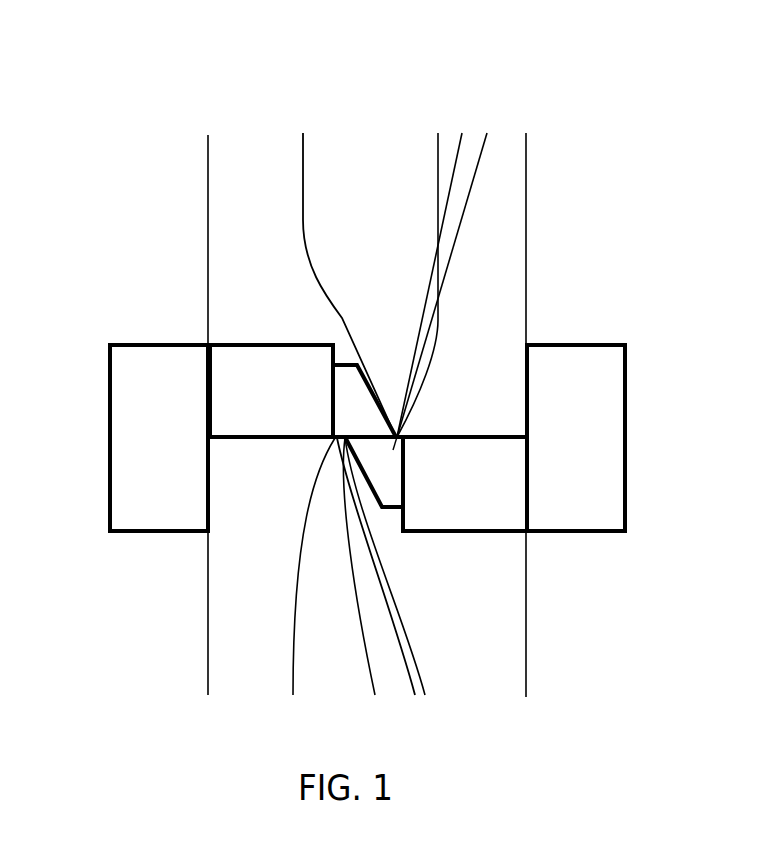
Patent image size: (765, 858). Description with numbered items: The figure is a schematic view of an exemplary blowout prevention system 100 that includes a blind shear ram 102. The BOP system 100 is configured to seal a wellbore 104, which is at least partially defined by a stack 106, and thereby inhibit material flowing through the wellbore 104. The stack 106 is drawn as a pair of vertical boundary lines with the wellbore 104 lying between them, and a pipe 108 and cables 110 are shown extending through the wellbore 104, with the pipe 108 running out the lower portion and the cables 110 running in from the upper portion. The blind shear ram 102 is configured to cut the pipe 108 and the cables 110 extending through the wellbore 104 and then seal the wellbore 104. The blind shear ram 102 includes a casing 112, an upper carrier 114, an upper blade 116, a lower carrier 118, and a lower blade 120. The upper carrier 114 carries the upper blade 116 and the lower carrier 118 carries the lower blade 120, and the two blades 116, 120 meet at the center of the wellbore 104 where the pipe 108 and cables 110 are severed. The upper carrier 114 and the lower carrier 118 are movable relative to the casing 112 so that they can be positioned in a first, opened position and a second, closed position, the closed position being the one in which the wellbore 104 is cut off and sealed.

The blowout prevention (BOP) system 100 is at (162, 50).
The blind shear ram 102 is at (616, 302).
The wellbore 104 is at (258, 182).
The stack 106 is at (208, 228).
The pipe 108 is at (293, 683).
The cables 110 is at (487, 133).
The casing 112 is at (108, 500).
The upper carrier 114 is at (233, 382).
The upper blade 116 is at (345, 405).
The lower carrier 118 is at (487, 498).
The lower blade 120 is at (388, 475).